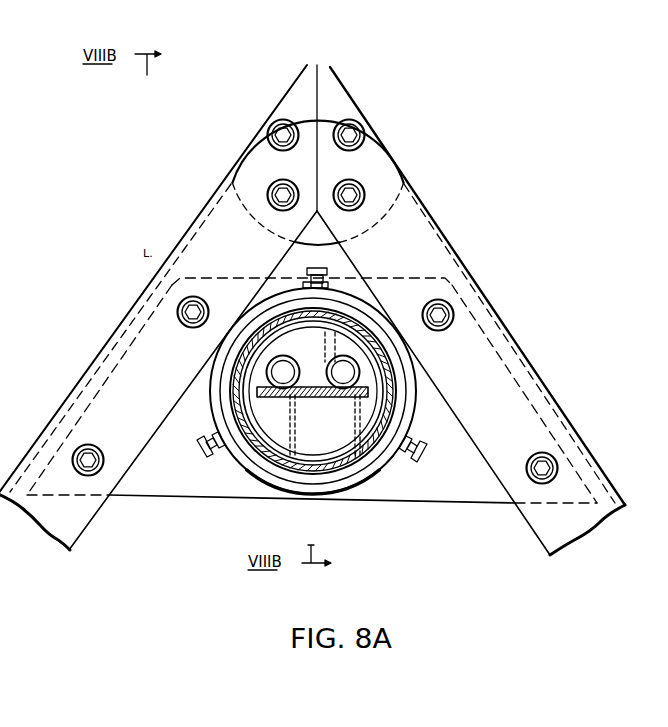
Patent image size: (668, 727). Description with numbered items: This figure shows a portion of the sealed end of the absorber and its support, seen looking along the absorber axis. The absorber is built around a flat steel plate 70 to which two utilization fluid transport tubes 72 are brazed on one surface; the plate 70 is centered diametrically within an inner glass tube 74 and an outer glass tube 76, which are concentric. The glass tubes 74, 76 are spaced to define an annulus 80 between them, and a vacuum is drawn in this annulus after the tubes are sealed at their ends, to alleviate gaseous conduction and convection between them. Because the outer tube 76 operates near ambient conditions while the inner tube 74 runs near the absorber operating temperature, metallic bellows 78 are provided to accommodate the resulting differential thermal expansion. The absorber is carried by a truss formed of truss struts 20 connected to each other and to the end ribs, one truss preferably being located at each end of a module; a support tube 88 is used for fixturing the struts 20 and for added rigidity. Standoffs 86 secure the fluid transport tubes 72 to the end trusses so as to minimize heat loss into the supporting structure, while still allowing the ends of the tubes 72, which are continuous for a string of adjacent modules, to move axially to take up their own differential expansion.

The truss struts 20 is at (213, 227).
The support tube 88 is at (387, 110).
The standoffs 86 is at (155, 483).
The metallic bellows 78 is at (383, 365).
The annulus 80 is at (347, 323).
The outer concentric glass tube 76 is at (232, 388).
The inner concentric glass tube 74 is at (272, 448).
The utilization fluid transport tubes 72 is at (327, 381).
The steel plate 70 is at (317, 400).